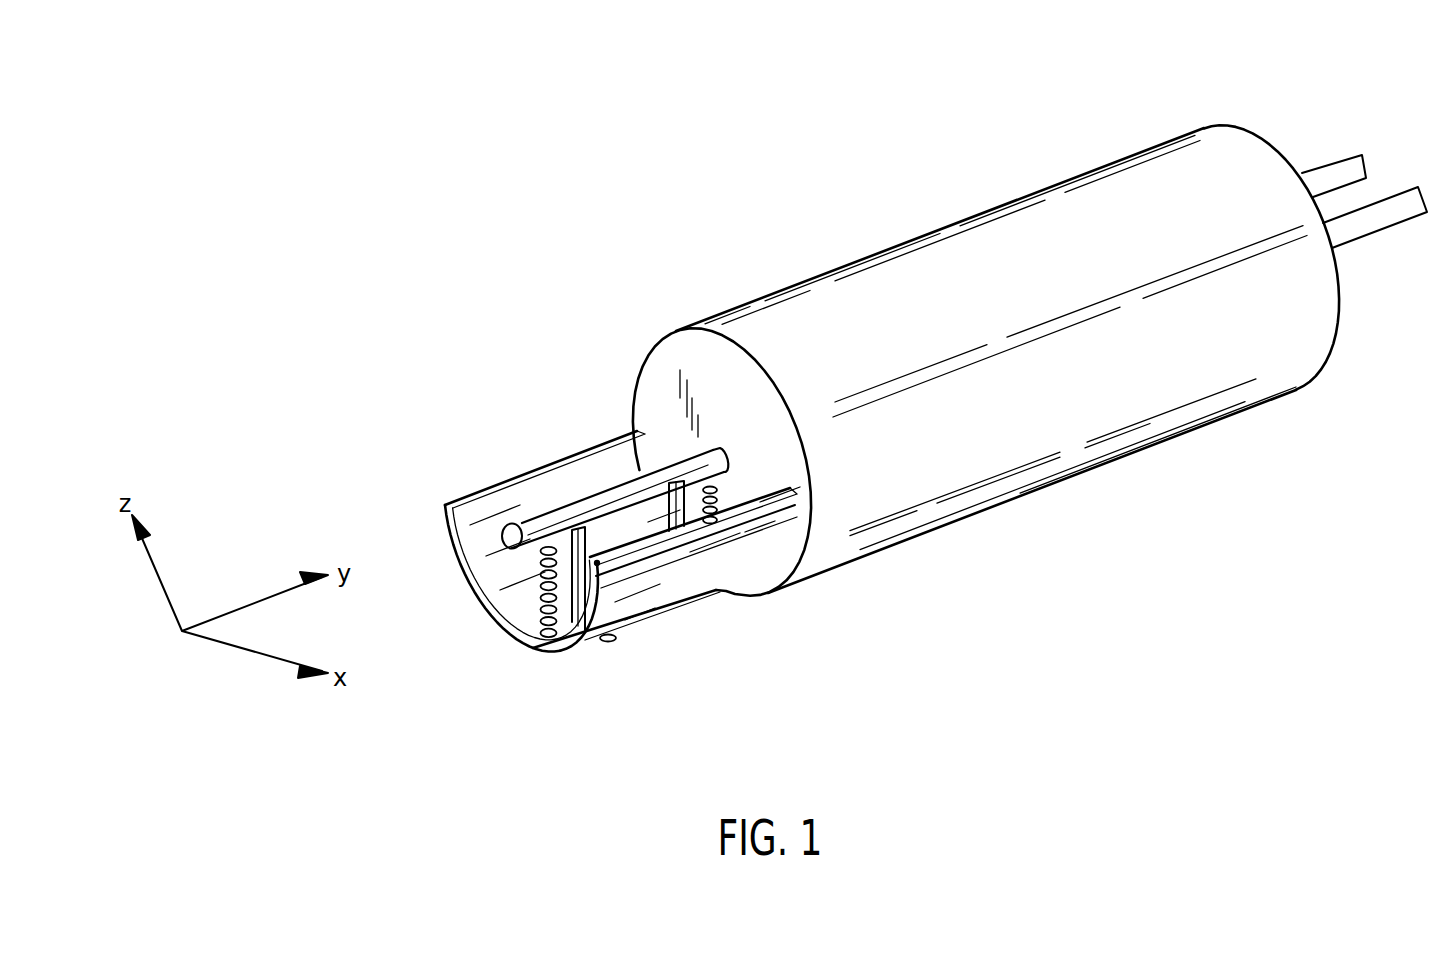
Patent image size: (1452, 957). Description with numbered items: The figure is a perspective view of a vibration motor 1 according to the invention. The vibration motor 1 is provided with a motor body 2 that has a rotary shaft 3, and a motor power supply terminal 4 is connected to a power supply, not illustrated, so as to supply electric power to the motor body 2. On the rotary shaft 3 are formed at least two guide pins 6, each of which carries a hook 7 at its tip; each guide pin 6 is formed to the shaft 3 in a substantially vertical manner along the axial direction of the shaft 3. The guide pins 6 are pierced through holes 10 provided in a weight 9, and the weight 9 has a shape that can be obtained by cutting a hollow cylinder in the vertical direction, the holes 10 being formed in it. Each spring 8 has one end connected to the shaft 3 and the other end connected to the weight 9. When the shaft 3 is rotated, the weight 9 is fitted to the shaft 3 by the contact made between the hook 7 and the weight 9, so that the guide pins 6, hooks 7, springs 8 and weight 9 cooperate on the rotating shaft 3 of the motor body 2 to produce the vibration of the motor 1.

The vibration motor 1 is at (1142, 570).
The motor body 2 is at (1215, 158).
The rotary shaft 3 is at (598, 498).
The motor power supply terminal 4 is at (1366, 178).
The guide pin 6 is at (597, 565).
The hook 7 is at (606, 641).
The spring 8 is at (714, 489).
The weight 9 is at (707, 583).
The hole 10 is at (592, 608).